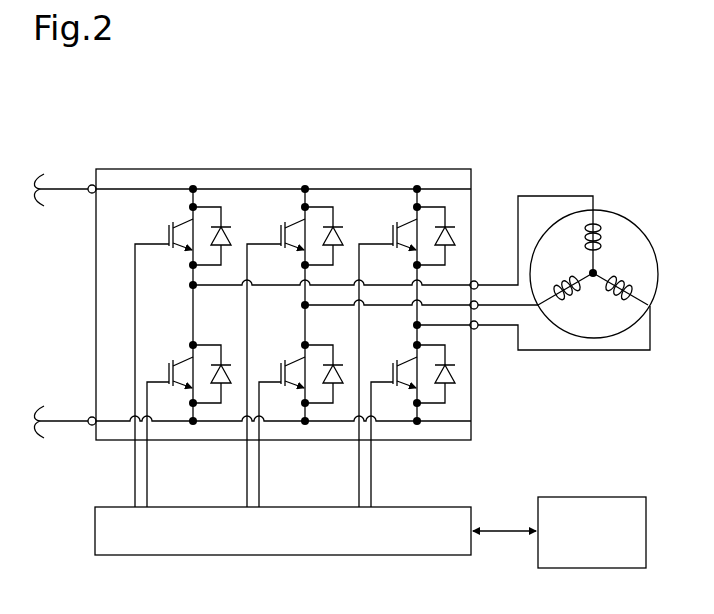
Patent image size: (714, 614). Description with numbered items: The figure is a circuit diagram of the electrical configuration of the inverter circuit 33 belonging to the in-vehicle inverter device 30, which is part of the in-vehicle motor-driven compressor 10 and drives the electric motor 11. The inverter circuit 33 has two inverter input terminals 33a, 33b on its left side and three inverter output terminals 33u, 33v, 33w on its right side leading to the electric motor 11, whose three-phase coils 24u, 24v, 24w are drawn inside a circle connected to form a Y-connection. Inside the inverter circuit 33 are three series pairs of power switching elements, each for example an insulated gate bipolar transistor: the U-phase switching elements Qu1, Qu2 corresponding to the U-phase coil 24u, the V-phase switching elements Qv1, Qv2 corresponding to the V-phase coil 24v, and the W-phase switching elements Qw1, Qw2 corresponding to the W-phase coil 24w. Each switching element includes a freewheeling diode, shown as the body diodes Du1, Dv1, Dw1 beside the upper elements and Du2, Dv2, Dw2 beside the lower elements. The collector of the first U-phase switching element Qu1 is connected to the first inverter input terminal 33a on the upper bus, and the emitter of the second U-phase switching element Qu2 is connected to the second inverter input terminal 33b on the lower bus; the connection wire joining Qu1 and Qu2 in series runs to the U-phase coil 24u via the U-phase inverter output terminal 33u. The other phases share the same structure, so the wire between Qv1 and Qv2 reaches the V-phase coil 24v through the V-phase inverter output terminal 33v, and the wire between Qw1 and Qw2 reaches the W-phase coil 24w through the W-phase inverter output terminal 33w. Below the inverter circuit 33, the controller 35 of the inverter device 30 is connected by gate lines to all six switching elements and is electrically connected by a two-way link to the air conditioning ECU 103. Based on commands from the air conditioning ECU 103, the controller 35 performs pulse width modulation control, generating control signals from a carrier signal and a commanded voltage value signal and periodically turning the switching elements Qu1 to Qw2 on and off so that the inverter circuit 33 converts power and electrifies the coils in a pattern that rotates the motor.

The in-vehicle motor-driven compressor 10 is at (635, 97).
The electric motor 11 is at (603, 209).
The U-phase coil 24u is at (603, 240).
The V-phase coil 24v is at (568, 293).
The W-phase coil 24w is at (620, 287).
The in-vehicle inverter device 30 is at (459, 150).
The inverter circuit 33 is at (288, 168).
The first inverter input terminal 33a is at (91, 192).
The second inverter input terminal 33b is at (89, 418).
The U-phase inverter output terminal 33u is at (478, 282).
The V-phase inverter output terminal 33v is at (477, 308).
The W-phase inverter output terminal 33w is at (478, 329).
The controller 35 is at (427, 507).
The air conditioning ECU 103 is at (600, 497).
The first U-phase switching element Qu1 is at (164, 229).
The first V-phase switching element Qv1 is at (277, 229).
The first W-phase switching element Qw1 is at (389, 229).
The second U-phase switching element Qu2 is at (166, 367).
The second V-phase switching element Qv2 is at (279, 367).
The second W-phase switching element Qw2 is at (391, 367).
The freewheeling diode Du1 is at (228, 222).
The freewheeling diode Dv1 is at (340, 222).
The freewheeling diode Dw1 is at (452, 223).
The freewheeling diode Du2 is at (224, 362).
The freewheeling diode Dv2 is at (336, 362).
The freewheeling diode Dw2 is at (458, 378).